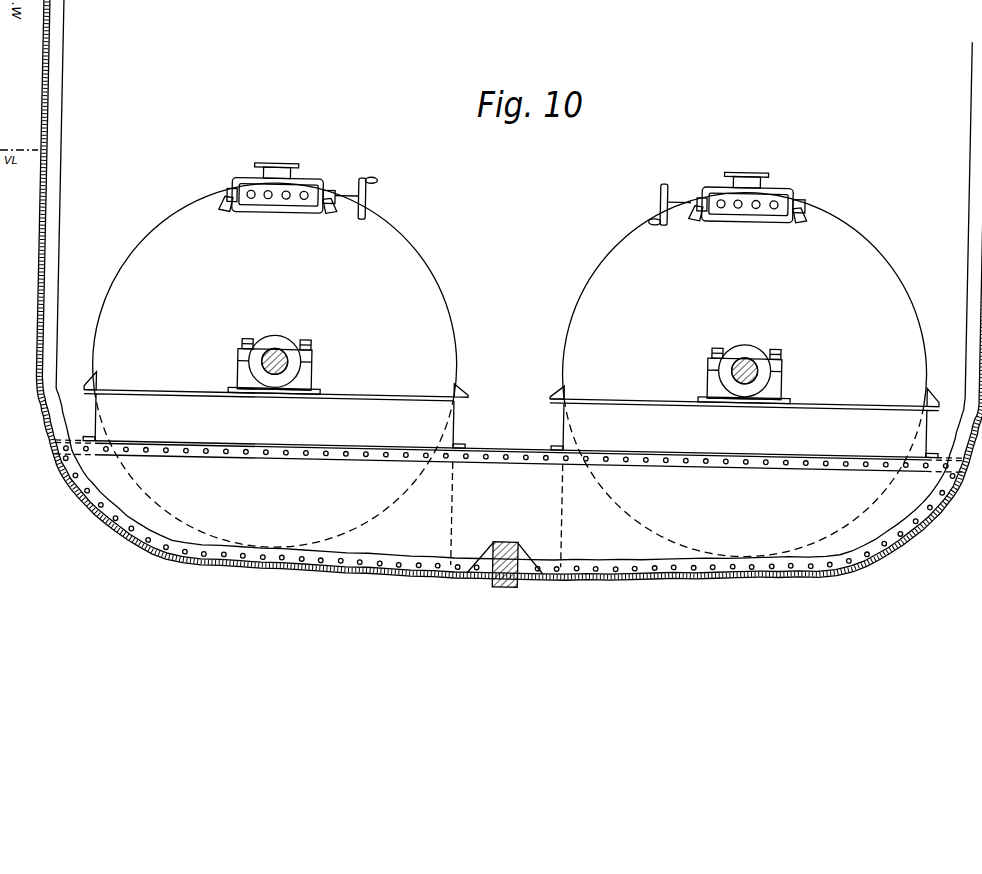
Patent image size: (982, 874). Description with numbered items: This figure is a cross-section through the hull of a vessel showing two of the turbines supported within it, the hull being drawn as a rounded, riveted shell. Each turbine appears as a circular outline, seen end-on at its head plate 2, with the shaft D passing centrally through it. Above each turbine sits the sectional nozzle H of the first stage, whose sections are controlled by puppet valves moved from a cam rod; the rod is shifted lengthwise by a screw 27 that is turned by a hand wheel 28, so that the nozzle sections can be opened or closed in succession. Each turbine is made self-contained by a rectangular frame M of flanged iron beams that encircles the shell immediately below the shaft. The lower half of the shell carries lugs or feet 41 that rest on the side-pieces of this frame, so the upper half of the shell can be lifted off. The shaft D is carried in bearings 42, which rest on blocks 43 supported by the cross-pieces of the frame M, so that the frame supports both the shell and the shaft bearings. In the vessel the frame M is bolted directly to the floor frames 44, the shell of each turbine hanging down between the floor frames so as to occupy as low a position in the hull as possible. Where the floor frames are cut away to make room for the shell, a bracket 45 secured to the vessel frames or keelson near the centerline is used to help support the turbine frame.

The head plate 2 is at (509, 370).
The screw 27 is at (331, 212).
The hand wheel 28 is at (513, 201).
The lugs or feet 41 is at (93, 393).
The bearings 42 is at (510, 352).
The blocks 43 is at (243, 399).
The floor frames 44 is at (509, 479).
The brackets 45 is at (463, 503).
The shaft D is at (258, 366).
The sectional nozzle H is at (513, 188).
The frame M is at (508, 416).